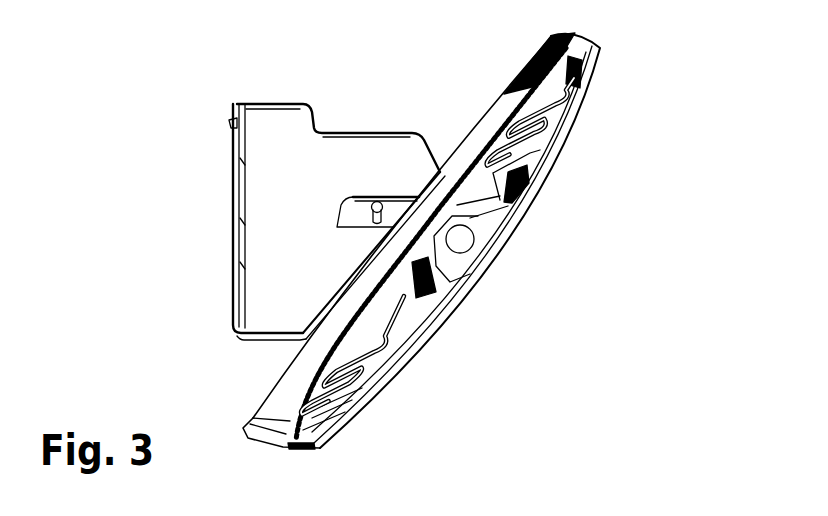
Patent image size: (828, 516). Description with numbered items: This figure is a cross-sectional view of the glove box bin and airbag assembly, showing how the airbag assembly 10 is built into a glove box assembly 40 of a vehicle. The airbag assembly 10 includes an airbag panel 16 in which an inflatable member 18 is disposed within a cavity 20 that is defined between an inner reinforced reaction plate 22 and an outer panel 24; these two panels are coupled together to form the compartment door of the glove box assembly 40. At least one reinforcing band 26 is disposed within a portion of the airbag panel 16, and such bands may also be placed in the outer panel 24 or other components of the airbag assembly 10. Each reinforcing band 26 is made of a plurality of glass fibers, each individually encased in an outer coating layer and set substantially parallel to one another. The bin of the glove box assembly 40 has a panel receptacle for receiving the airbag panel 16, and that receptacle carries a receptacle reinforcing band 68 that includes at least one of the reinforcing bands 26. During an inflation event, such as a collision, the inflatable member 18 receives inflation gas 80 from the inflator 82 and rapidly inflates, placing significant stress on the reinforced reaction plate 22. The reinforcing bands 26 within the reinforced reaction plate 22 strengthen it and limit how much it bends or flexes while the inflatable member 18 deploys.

The airbag assembly 10 is at (345, 57).
The airbag panel 16 is at (386, 399).
The inflatable member 18 is at (390, 352).
The cavity 20 is at (440, 311).
The reinforced reaction plate 22 is at (303, 354).
The outer panel 24 is at (546, 180).
The reinforcing band 26 is at (512, 72).
The glove box assembly 40 is at (192, 220).
The receptacle reinforcing band 68 is at (428, 216).
The inflation gas 80 is at (482, 262).
The inflator 82 is at (474, 240).